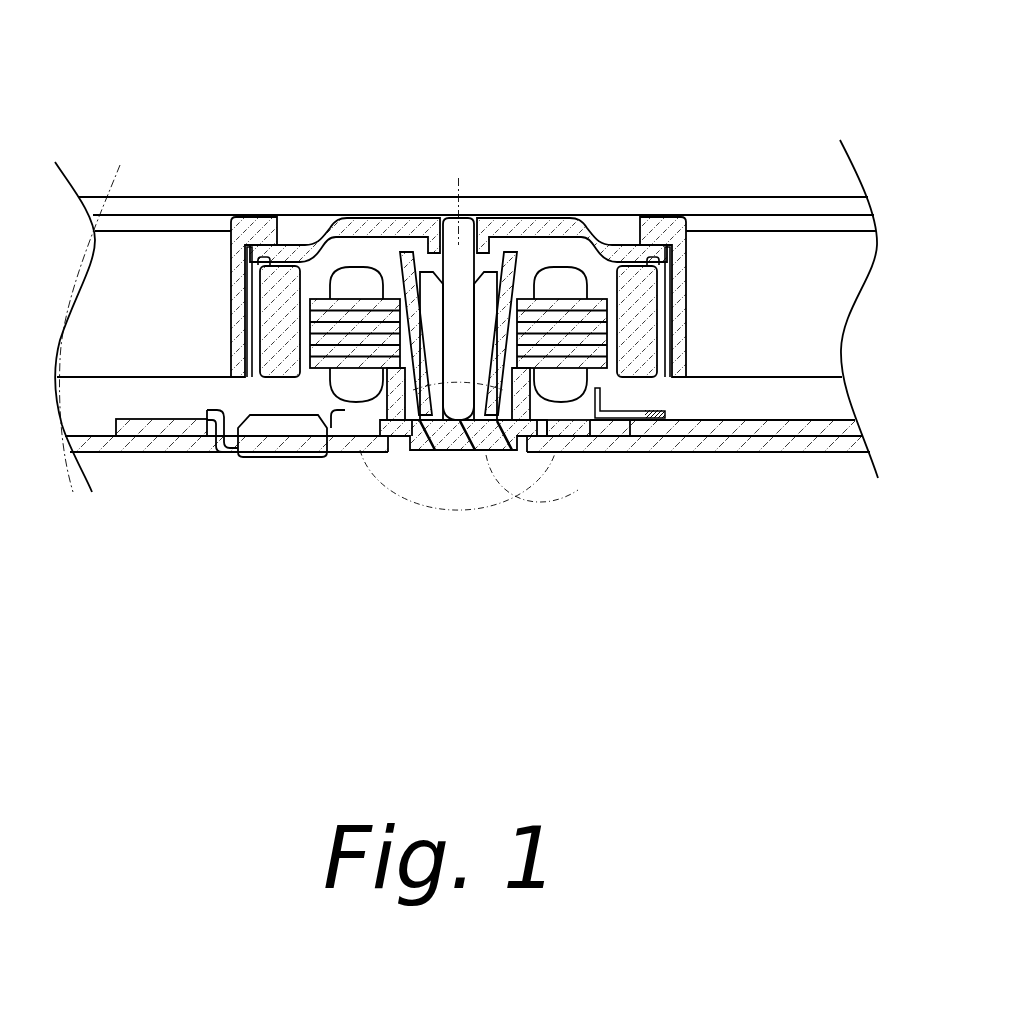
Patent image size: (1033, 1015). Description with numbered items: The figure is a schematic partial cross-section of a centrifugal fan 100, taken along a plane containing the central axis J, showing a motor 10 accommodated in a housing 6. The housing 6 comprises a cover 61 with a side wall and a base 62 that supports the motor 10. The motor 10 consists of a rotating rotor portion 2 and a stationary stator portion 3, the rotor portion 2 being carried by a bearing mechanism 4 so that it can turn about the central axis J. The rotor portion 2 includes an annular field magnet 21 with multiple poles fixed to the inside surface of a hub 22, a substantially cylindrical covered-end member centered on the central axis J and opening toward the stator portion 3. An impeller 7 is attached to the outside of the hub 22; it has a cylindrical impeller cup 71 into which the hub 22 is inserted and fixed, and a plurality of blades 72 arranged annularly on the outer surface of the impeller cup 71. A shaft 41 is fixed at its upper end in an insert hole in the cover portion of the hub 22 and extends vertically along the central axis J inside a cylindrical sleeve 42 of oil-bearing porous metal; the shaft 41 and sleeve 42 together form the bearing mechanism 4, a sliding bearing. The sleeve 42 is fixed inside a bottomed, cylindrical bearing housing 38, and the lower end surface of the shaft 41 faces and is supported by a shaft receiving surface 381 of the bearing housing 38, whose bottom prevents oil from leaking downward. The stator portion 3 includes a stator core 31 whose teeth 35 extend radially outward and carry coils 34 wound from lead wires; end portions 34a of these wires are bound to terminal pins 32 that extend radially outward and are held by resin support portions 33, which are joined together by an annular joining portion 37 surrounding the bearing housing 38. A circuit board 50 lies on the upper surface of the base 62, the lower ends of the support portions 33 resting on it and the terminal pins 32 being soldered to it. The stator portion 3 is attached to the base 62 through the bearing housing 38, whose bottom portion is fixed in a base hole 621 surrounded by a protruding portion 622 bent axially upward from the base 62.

The centrifugal fan 100 is at (737, 56).
The motor 10 is at (783, 579).
The impeller 7 is at (97, 113).
The impeller cup 71 is at (262, 265).
The blades 72 is at (172, 258).
The rotor portion 2 is at (248, 117).
The field magnet 21 is at (254, 250).
The hub 22 is at (308, 246).
The bearing housing 38 is at (387, 214).
The shaft receiving surface 381 is at (405, 265).
The bearing mechanism 4 is at (470, 114).
The shaft 41 is at (458, 222).
The sleeve 42 is at (488, 272).
The central axis J is at (455, 192).
The joining portion 37 is at (563, 265).
The coils 34 is at (612, 245).
The teeth 35 is at (662, 252).
The end portions of the lead wires 34a is at (656, 409).
The stator portion 3 is at (660, 519).
The stator core 31 is at (553, 440).
The terminal pins 32 is at (624, 440).
The support portions 33 is at (608, 442).
The base hole 621 is at (441, 457).
The protruding portion 622 is at (493, 457).
The housing 6 is at (148, 539).
The cover 61 is at (62, 460).
The base 62 is at (115, 445).
The circuit board 50 is at (170, 421).